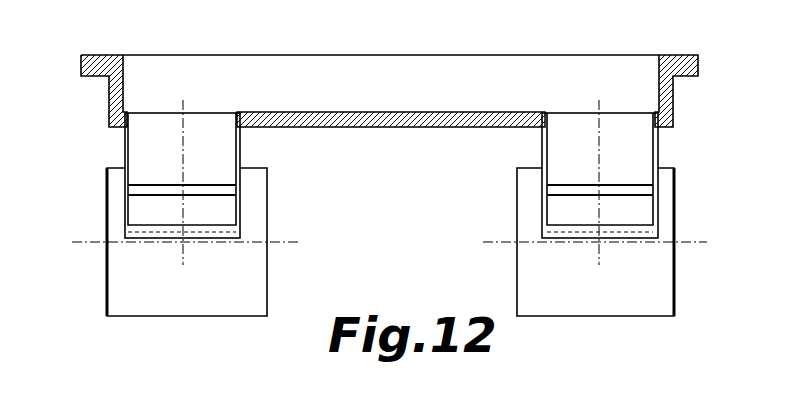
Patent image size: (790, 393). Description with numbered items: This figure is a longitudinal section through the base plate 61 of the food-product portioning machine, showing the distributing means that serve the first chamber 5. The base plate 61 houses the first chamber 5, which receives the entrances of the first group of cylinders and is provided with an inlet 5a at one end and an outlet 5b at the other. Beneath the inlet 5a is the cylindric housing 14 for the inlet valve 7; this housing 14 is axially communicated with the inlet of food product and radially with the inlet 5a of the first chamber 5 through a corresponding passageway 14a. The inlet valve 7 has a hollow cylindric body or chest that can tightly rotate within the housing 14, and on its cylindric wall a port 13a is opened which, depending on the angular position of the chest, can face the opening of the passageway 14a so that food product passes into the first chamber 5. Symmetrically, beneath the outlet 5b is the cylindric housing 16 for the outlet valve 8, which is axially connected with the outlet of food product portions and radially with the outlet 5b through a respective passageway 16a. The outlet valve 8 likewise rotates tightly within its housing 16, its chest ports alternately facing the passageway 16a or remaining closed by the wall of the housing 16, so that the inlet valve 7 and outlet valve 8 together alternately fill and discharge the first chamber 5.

The first chamber 5 is at (360, 68).
The inlet of first chamber 5a is at (157, 118).
The outlet of first chamber 5b is at (610, 118).
The base plate 61 is at (686, 56).
The passageway 14a is at (142, 148).
The port 13a is at (145, 208).
The cylindric housing 14 is at (268, 285).
The inlet valve 7 is at (274, 200).
The passageway 16a is at (640, 152).
The cylindric housing 16 is at (668, 287).
The outlet valve 8 is at (506, 197).